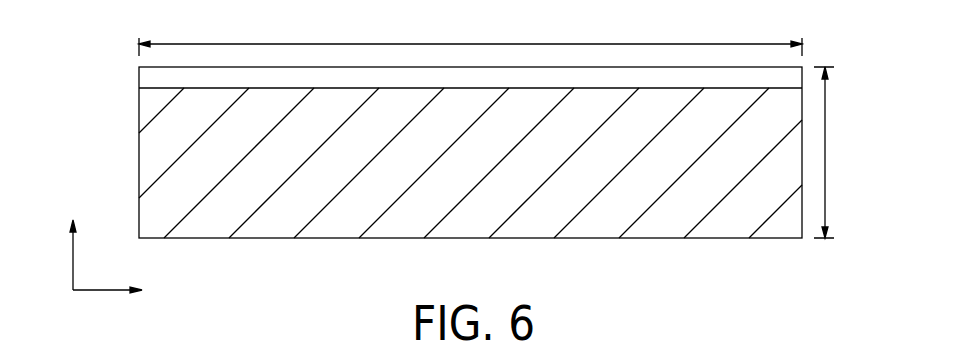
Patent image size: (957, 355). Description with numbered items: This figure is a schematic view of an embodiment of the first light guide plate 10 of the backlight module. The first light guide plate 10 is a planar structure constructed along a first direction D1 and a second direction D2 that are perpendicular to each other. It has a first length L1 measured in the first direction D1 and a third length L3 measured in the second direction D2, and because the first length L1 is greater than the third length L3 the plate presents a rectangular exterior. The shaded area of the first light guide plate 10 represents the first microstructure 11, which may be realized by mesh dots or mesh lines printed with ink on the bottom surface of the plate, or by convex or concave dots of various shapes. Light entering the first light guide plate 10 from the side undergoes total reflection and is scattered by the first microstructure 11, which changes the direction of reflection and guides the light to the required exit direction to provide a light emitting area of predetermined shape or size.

The first light guide plate 10 is at (139, 108).
The first microstructure 11 is at (157, 158).
The first length L1 is at (470, 31).
The third length L3 is at (841, 152).
The first direction D1 is at (125, 292).
The second direction D2 is at (80, 241).